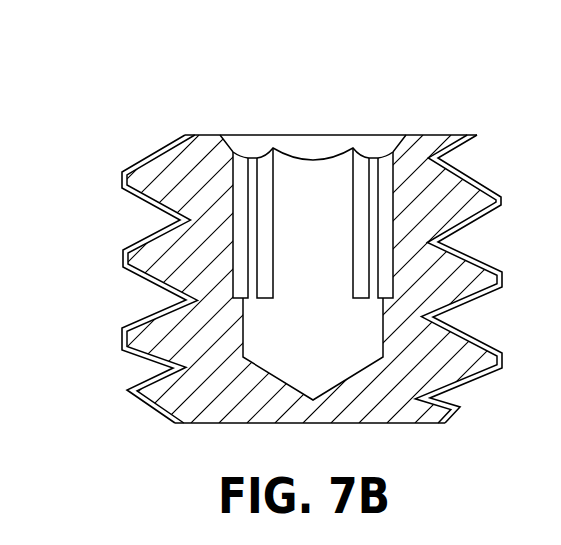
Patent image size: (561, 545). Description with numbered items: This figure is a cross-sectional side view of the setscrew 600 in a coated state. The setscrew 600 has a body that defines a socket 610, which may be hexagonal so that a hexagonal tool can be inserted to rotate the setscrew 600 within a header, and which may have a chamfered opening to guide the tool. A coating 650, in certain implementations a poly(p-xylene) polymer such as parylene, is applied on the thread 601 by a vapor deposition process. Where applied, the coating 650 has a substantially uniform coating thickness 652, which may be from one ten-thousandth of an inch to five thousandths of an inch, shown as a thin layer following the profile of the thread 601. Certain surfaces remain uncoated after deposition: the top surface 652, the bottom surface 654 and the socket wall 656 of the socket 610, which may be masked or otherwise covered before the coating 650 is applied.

The setscrew 600 is at (128, 48).
The thread 601 is at (168, 180).
The socket 610 is at (322, 190).
The coating 650 is at (122, 255).
The coating thickness 652 is at (207, 133).
The bottom surface 654 is at (427, 423).
The socket wall 656 is at (387, 190).